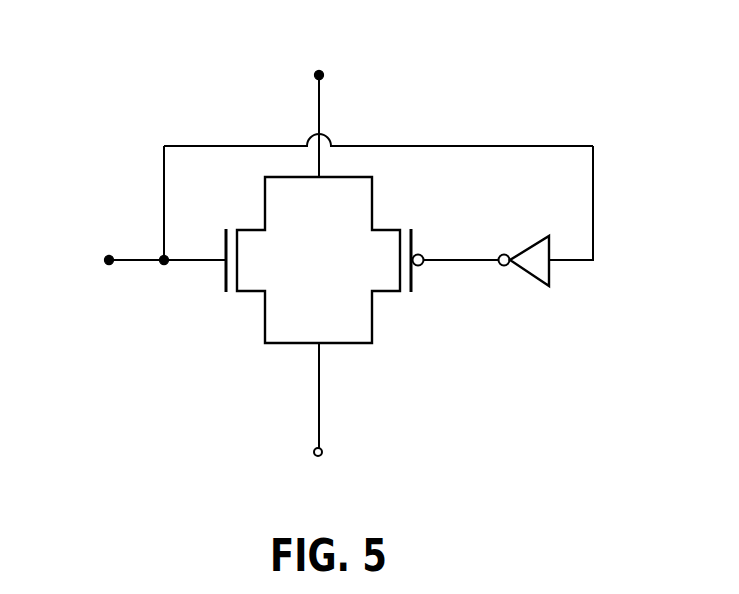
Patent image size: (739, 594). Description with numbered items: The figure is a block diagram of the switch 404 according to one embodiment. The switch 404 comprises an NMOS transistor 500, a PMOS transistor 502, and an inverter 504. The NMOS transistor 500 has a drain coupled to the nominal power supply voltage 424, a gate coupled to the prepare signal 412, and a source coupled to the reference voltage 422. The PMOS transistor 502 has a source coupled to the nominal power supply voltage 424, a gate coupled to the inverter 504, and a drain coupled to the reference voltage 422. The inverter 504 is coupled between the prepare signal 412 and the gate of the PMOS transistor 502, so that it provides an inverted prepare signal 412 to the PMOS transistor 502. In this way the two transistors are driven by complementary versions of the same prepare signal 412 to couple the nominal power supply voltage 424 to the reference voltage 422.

The switch 404 is at (126, 79).
The prepare signal 412 is at (104, 260).
The reference voltage 422 is at (312, 455).
The nominal power supply voltage 424 is at (324, 72).
The NMOS transistor 500 is at (225, 280).
The PMOS transistor 502 is at (412, 278).
The inverter 504 is at (551, 273).